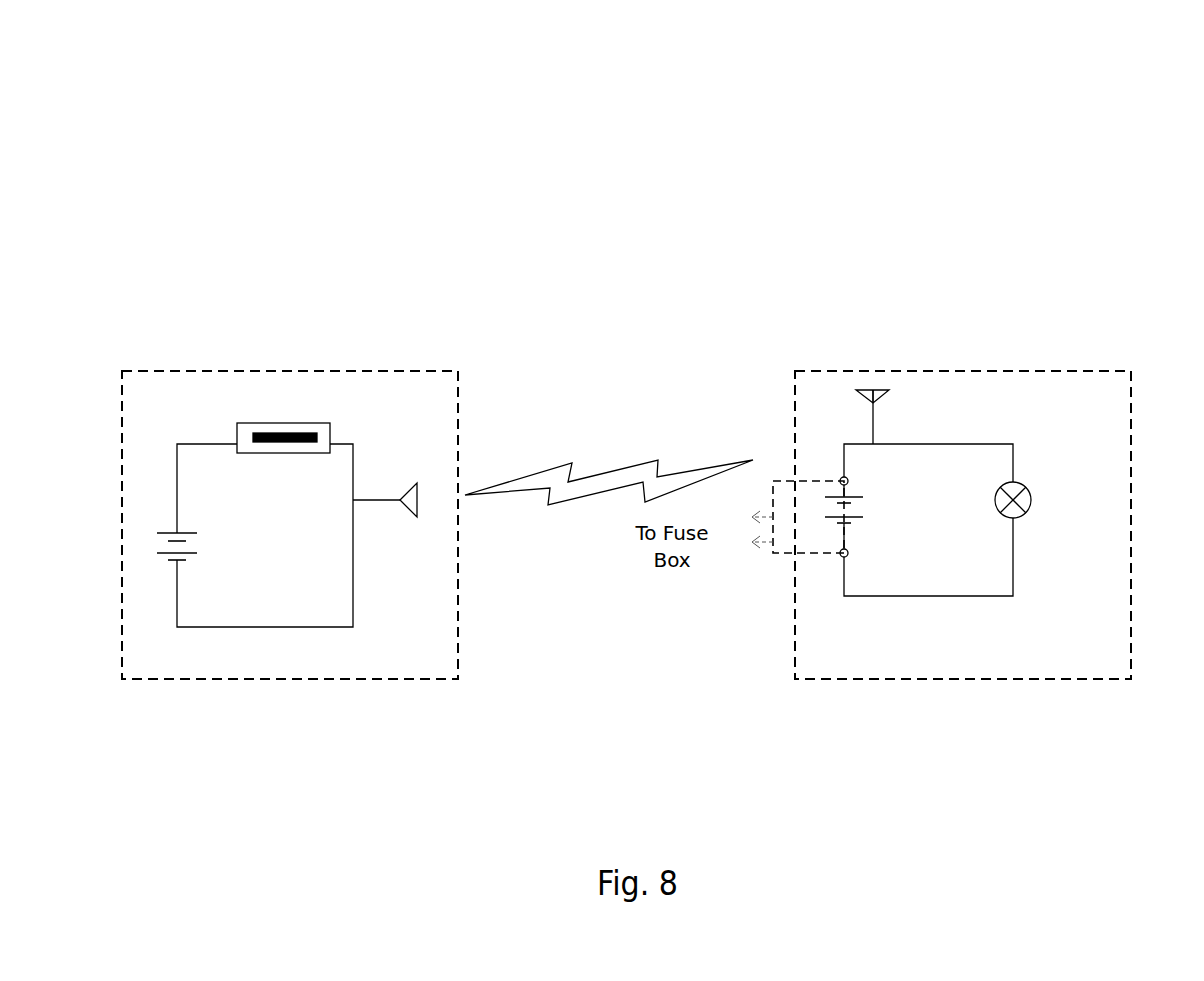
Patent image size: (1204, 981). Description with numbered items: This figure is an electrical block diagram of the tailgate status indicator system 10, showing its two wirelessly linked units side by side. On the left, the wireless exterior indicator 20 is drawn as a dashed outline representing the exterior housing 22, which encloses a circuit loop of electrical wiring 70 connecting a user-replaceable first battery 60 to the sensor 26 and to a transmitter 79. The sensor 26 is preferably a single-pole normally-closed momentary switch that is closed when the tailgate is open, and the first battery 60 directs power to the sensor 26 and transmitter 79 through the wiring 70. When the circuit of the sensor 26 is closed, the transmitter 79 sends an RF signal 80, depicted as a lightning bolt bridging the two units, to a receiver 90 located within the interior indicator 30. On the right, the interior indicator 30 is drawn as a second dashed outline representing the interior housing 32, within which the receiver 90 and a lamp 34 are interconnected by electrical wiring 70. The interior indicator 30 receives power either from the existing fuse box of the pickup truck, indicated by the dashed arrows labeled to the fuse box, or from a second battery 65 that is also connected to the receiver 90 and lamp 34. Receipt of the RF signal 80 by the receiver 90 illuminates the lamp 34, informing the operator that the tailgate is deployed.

The tailgate status indicator system 10 is at (147, 112).
The wireless exterior indicator 20 is at (340, 288).
The exterior housing 22 is at (197, 370).
The sensor 26 is at (323, 428).
The interior indicator 30 is at (816, 326).
The interior housing 32 is at (1131, 470).
The lamp 34 is at (1020, 483).
The first battery 60 is at (162, 555).
The second battery 65 is at (830, 519).
The electrical wiring 70 is at (177, 473).
The transmitter 79 is at (417, 507).
The RF signal 80 is at (552, 482).
The receiver 90 is at (886, 390).